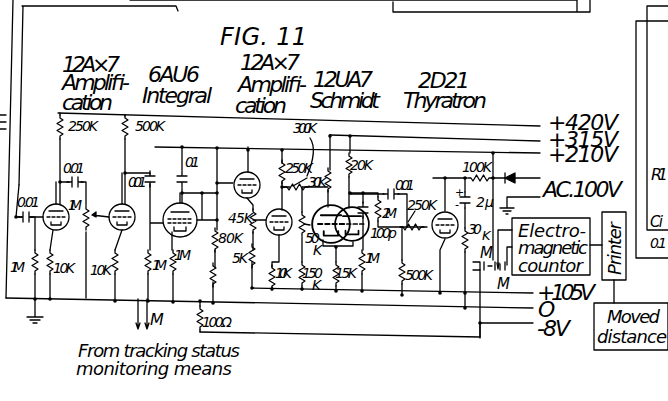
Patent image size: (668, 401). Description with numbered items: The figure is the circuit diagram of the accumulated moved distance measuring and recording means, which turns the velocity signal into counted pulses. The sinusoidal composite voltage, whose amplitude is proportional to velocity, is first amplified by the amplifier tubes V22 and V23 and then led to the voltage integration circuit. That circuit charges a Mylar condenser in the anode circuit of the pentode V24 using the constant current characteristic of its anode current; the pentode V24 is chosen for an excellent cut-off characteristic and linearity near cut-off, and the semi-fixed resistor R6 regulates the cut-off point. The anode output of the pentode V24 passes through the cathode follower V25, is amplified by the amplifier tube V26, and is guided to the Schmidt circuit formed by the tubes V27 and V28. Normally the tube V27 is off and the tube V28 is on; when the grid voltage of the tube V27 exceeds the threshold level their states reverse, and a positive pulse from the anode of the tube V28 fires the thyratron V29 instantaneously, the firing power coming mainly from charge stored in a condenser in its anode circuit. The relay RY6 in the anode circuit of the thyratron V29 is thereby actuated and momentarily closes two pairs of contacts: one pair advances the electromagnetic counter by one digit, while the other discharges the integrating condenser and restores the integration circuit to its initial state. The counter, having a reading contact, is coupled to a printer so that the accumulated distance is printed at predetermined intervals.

The amplifier tube V22 is at (52, 203).
The amplifier tube V23 is at (115, 201).
The pentode V24 is at (178, 212).
The cathode follower V25 is at (243, 176).
The amplifier tube V26 is at (276, 214).
The Schmidt circuit tube V27 is at (328, 218).
The Schmidt circuit tube V28 is at (350, 206).
The thyratron V29 is at (440, 208).
The semi-fixed resistor R6 is at (227, 281).
The relay RY6 is at (474, 269).